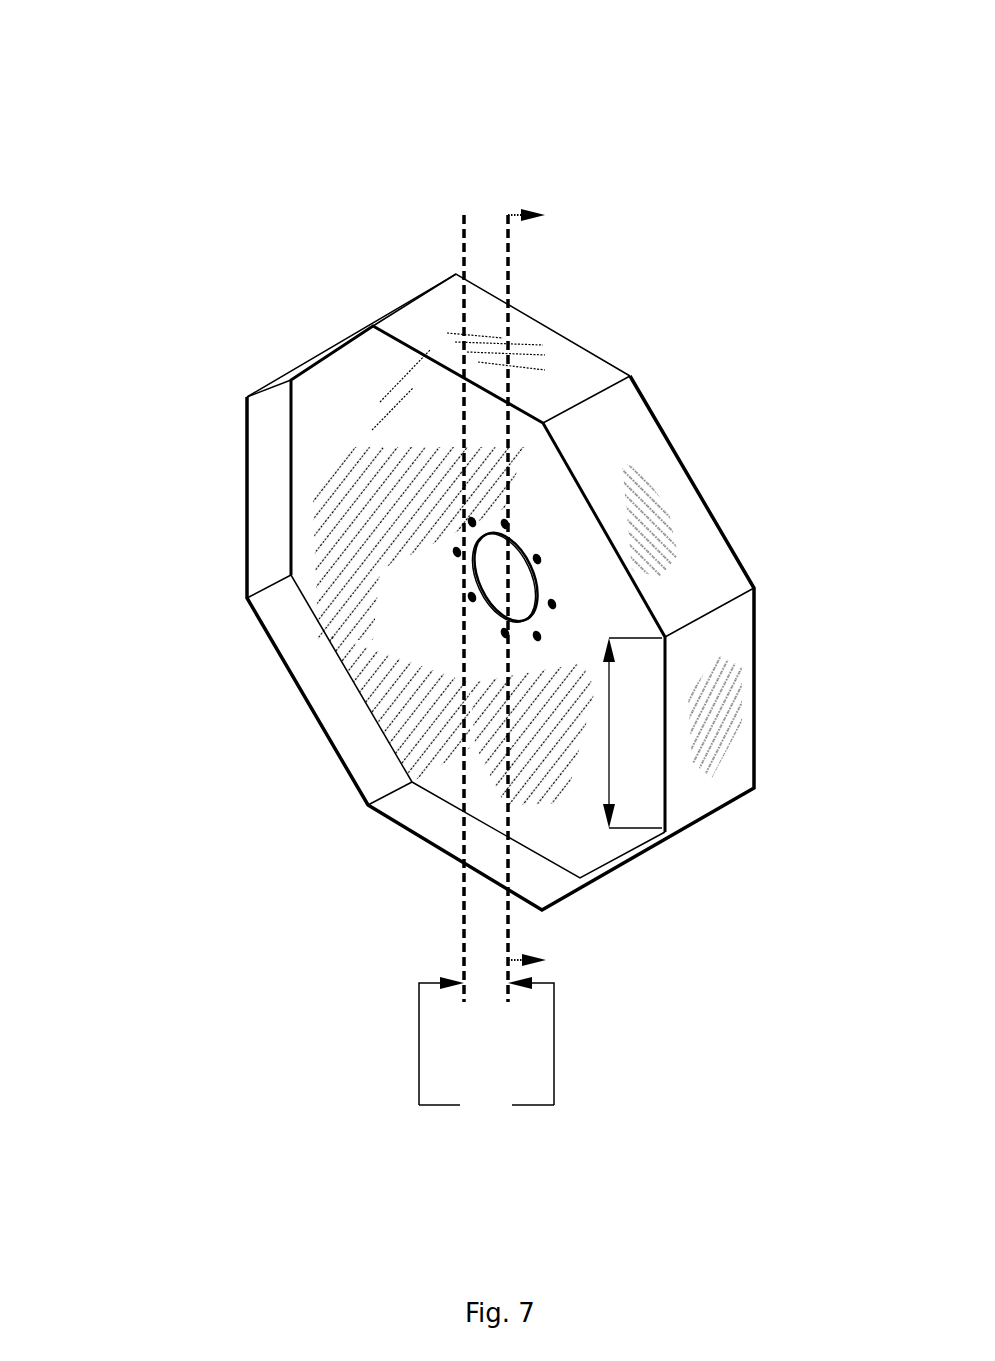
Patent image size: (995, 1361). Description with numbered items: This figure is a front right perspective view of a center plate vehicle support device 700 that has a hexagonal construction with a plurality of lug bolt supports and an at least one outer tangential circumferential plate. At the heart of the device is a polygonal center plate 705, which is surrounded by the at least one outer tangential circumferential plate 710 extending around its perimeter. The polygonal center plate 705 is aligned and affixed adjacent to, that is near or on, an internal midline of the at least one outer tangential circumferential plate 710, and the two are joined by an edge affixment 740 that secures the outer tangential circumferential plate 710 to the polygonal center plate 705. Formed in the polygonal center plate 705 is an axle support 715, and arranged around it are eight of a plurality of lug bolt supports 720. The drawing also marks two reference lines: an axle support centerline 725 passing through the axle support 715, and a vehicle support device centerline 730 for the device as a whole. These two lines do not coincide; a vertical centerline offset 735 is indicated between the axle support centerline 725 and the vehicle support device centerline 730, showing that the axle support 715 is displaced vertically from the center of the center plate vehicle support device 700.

The center plate vehicle support device 700 is at (150, 40).
The polygonal center plate 705 is at (362, 346).
The outer tangential circumferential plate 710 is at (601, 354).
The axle support 715 is at (462, 538).
The lug bolt supports 720 is at (442, 613).
The axle support centerline 725 is at (537, 467).
The vehicle support device centerline 730 is at (437, 887).
The vertical centerline offset 735 is at (486, 1049).
The edge affixment 740 is at (561, 862).